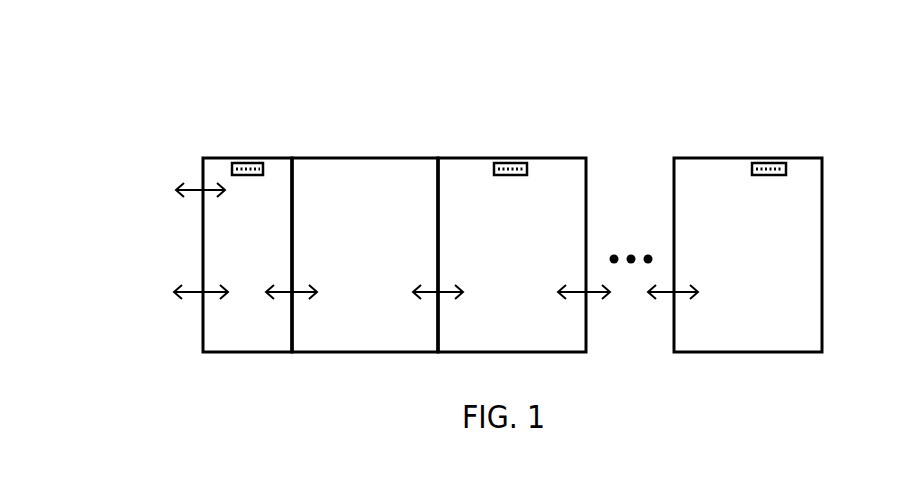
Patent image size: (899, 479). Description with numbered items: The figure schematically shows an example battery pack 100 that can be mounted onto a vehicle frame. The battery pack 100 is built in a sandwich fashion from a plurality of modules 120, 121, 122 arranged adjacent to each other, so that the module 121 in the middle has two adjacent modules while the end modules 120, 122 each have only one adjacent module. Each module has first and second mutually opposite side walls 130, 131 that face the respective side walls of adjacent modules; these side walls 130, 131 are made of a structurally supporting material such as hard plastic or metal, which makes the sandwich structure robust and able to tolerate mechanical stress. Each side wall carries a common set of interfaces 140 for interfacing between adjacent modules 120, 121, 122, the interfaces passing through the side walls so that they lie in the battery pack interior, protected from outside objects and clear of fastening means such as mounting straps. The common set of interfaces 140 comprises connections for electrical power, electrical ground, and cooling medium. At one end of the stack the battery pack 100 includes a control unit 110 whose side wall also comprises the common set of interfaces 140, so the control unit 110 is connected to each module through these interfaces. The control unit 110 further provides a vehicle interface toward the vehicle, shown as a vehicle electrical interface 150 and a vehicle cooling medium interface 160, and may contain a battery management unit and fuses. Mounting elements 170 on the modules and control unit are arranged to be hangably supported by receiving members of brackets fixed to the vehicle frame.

The battery pack 100 is at (179, 70).
The control unit 110 is at (262, 262).
The module 120 is at (388, 262).
The module 121 is at (535, 262).
The module 122 is at (770, 262).
The first side wall 130 is at (426, 193).
The second side wall 131 is at (304, 194).
The common set of interfaces 140 is at (470, 309).
The vehicle electrical interface 150 is at (189, 207).
The vehicle cooling medium interface 160 is at (190, 309).
The mounting element 170 is at (247, 162).